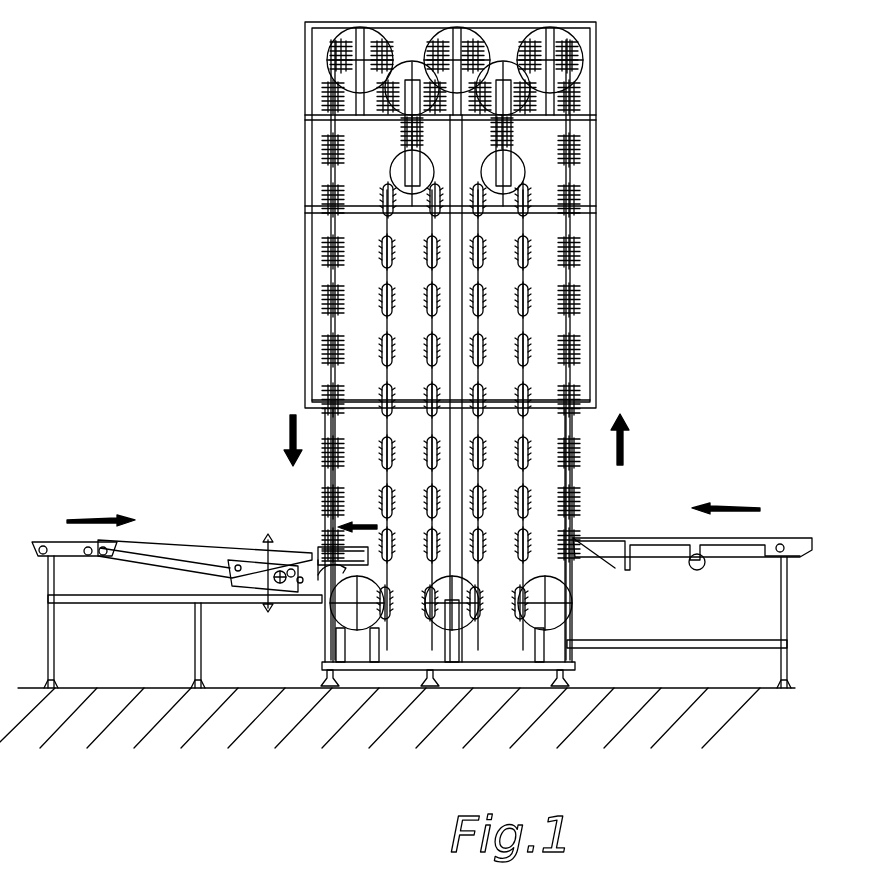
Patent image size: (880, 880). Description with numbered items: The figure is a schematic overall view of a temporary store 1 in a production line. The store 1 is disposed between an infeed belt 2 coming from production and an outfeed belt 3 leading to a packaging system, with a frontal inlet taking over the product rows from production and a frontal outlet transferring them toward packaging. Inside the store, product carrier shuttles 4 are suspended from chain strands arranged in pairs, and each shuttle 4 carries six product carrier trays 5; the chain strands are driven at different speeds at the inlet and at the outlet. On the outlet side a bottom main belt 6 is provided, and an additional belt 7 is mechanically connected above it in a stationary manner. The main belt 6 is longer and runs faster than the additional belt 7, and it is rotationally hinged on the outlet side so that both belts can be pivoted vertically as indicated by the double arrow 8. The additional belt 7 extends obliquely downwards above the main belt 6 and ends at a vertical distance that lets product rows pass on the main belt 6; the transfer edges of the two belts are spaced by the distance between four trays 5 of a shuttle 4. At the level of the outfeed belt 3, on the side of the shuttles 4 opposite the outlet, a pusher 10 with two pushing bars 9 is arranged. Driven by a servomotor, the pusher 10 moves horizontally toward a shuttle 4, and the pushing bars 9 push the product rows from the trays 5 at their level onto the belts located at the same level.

The temporary store 1 is at (258, 181).
The infeed belt 2 is at (702, 482).
The outfeed belt 3 is at (80, 444).
The product carrier shuttle 4 is at (322, 350).
The product carrier tray 5 is at (316, 409).
The main belt 6 is at (150, 547).
The additional belt 7 is at (292, 552).
The double arrow 8 is at (268, 575).
The pushing bar 9 is at (343, 543).
The pusher 10 is at (326, 600).